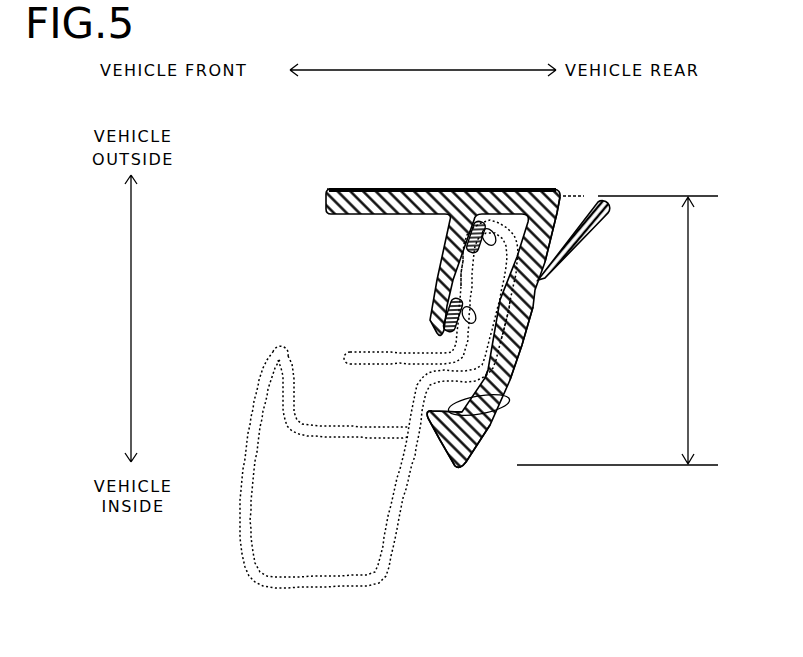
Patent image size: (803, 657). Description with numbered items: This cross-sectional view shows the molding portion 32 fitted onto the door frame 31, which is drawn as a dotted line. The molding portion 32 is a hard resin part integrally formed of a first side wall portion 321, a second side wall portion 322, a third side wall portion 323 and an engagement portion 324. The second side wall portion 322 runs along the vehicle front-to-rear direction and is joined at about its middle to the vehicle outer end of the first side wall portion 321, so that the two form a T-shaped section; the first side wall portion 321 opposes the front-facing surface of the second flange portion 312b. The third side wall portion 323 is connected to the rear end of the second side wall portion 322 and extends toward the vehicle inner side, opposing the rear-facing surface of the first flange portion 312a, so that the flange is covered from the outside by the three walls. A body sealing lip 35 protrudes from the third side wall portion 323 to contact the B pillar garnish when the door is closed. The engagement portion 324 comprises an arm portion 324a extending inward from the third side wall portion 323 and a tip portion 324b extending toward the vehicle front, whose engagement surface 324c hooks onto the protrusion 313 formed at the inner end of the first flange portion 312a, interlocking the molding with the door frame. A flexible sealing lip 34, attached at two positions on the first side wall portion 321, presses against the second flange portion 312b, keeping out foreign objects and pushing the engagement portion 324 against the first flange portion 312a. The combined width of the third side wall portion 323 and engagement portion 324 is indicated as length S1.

The door frame 31 is at (236, 364).
The molding portion 32 is at (487, 325).
The sealing lip 34 is at (467, 237).
The body sealing lip 35 is at (593, 239).
The first flange portion 312a is at (531, 314).
The second flange portion 312b is at (466, 282).
The protrusion 313 is at (476, 432).
The first side wall portion 321 is at (438, 263).
The second side wall portion 322 is at (424, 190).
The third side wall portion 323 is at (558, 230).
The engagement portion 324 is at (508, 364).
The arm portion 324a is at (518, 348).
The tip portion 324b is at (446, 462).
The engagement surface 324c is at (509, 401).
The length S1 is at (619, 330).